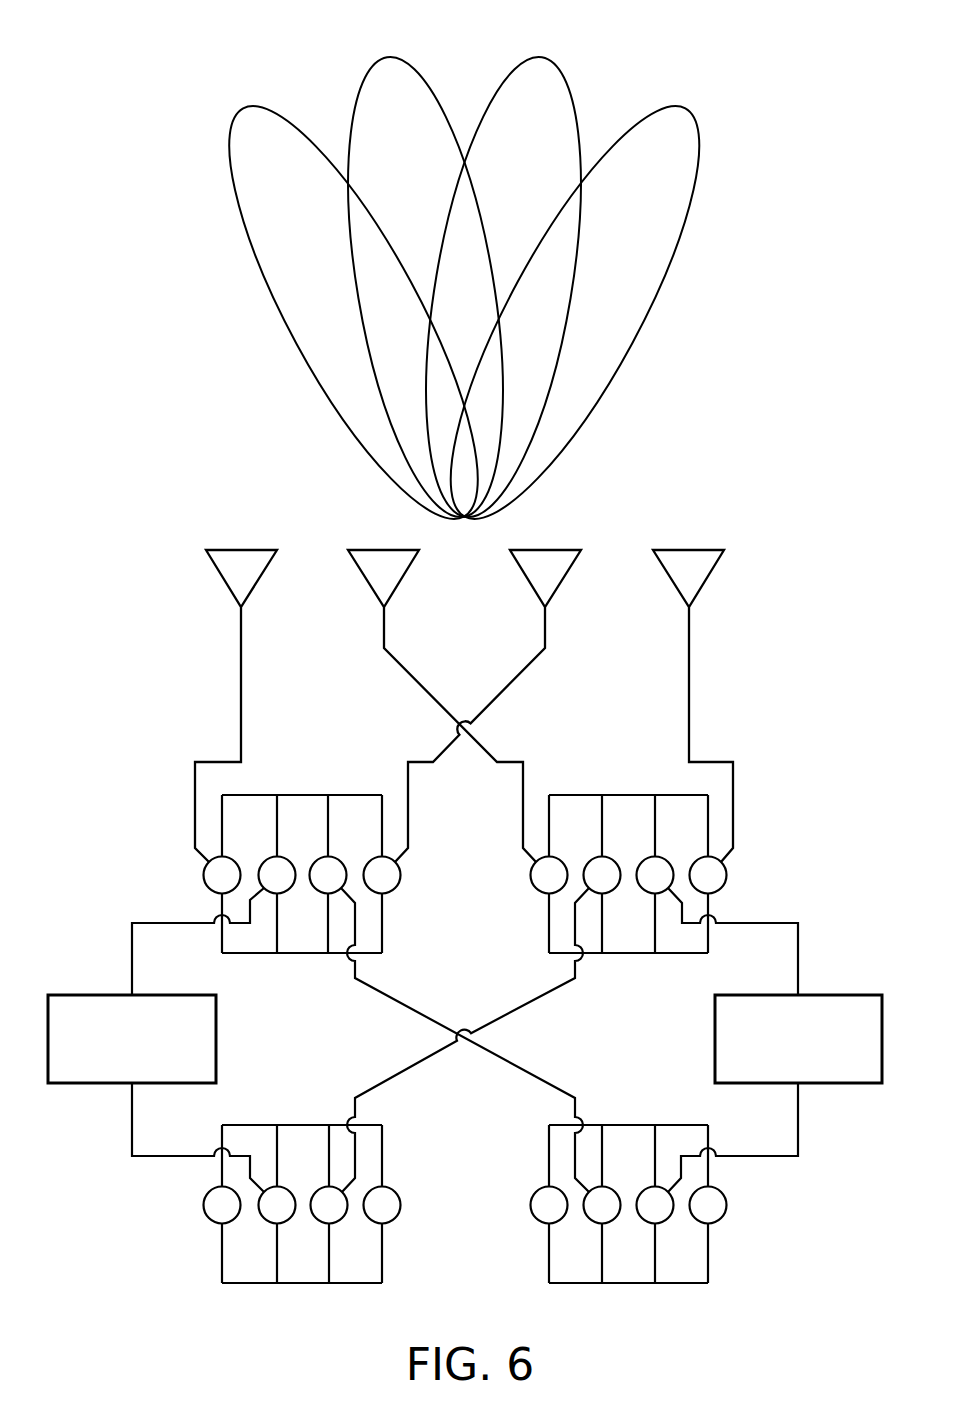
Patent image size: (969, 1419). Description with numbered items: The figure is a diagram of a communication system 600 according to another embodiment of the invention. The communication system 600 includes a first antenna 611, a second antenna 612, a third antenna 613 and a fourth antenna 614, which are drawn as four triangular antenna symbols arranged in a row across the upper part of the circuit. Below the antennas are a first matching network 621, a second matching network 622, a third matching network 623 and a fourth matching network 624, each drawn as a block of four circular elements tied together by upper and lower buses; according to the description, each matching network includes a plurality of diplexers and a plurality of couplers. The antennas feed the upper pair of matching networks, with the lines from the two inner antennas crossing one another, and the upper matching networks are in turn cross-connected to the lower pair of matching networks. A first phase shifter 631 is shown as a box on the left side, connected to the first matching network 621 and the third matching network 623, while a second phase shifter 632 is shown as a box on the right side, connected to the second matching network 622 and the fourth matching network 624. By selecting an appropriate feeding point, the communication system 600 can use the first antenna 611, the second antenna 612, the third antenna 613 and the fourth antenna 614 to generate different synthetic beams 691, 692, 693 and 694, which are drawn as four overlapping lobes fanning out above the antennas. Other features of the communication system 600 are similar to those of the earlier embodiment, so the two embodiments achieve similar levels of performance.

The communication system 600 is at (91, 35).
The synthetic beam 691 is at (230, 106).
The synthetic beam 692 is at (383, 56).
The synthetic beam 693 is at (546, 56).
The synthetic beam 694 is at (698, 107).
The first antenna 611 is at (241, 547).
The second antenna 612 is at (384, 547).
The third antenna 613 is at (547, 547).
The fourth antenna 614 is at (691, 547).
The first matching network 621 is at (302, 776).
The second matching network 622 is at (630, 776).
The third matching network 623 is at (302, 1106).
The fourth matching network 624 is at (630, 1106).
The first phase shifter 631 is at (90, 993).
The second phase shifter 632 is at (840, 993).